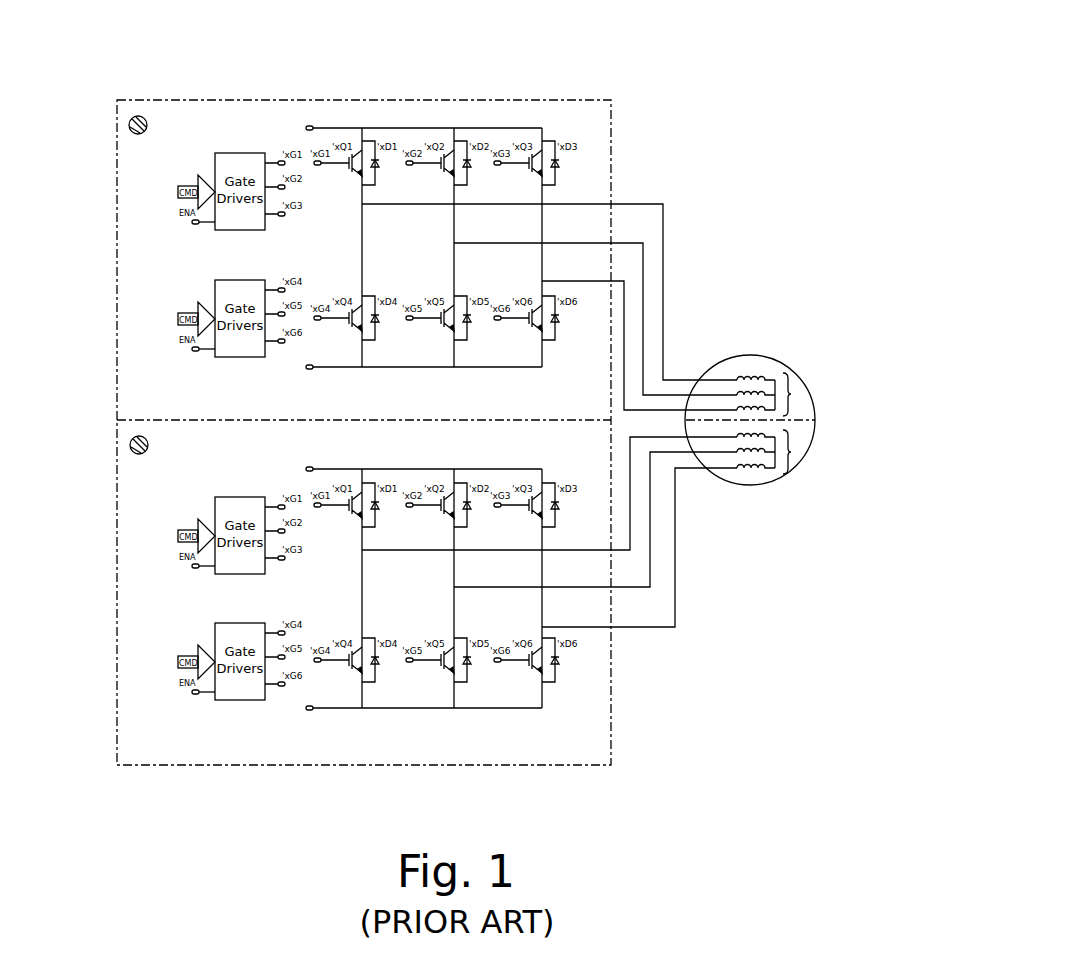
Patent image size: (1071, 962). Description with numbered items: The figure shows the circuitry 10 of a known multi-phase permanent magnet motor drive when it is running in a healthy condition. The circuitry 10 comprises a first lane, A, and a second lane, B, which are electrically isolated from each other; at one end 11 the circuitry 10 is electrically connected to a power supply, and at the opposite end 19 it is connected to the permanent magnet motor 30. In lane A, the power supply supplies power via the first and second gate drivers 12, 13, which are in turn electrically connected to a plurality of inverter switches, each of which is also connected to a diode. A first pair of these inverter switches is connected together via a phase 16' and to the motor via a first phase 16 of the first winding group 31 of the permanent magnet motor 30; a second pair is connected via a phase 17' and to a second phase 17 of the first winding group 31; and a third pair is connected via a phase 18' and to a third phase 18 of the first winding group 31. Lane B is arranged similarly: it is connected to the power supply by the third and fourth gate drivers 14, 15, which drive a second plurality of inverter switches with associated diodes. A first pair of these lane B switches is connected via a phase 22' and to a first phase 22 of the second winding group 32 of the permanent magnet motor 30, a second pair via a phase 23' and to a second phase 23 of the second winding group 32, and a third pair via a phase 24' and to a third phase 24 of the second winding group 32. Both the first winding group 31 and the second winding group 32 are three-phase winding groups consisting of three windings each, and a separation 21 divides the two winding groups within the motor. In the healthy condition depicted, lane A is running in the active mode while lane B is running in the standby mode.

The circuitry 10 is at (491, 386).
The one end 11 is at (355, 409).
The first gate driver 12 is at (236, 152).
The second gate driver 13 is at (213, 280).
The third gate driver 14 is at (213, 497).
The fourth gate driver 15 is at (213, 636).
The first phase 16 is at (553, 258).
The second phase 17 is at (599, 293).
The third phase 18 is at (646, 327).
The phase 16' is at (347, 247).
The phase 17' is at (435, 247).
The phase 18' is at (522, 247).
The opposite end 19 is at (819, 417).
The winding set separation 21 is at (786, 442).
The first phase 22 is at (549, 499).
The second phase 23 is at (599, 529).
The third phase 24 is at (643, 567).
The phase 22' is at (351, 588).
The phase 23' is at (442, 588).
The phase 24' is at (585, 588).
The permanent magnet motor 30 is at (815, 402).
The first winding group 31 is at (791, 394).
The second winding group 32 is at (795, 458).